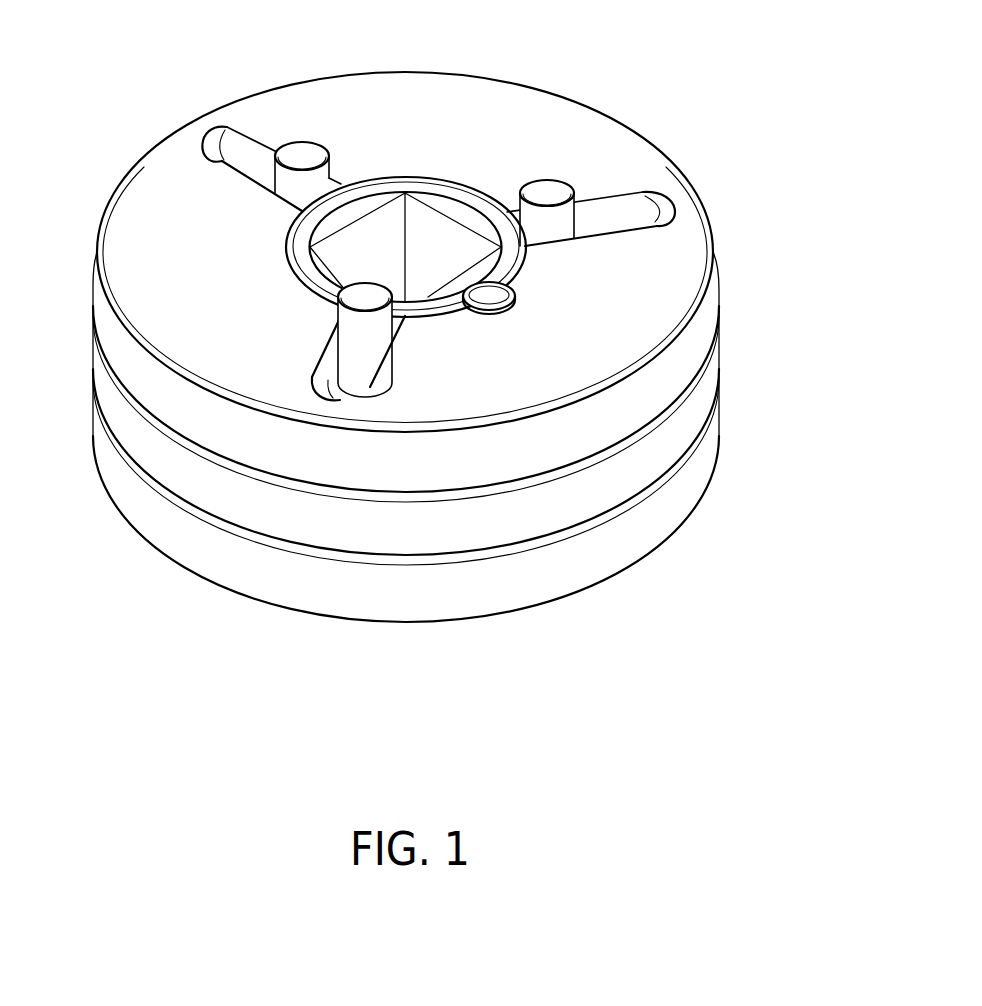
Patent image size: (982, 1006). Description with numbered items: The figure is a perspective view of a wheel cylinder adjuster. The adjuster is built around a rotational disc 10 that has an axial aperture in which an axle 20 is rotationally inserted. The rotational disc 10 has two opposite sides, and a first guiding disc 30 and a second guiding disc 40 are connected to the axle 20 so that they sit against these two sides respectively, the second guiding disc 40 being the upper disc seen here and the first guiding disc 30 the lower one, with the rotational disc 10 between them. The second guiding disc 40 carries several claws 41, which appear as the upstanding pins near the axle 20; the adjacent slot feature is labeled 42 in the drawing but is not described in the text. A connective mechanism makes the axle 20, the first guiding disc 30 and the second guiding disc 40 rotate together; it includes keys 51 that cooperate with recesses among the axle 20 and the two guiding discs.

The rotational disc 10 is at (568, 503).
The axle 20 is at (463, 217).
The first guiding disc 30 is at (495, 589).
The second guiding disc 40 is at (630, 405).
The claws 41 is at (300, 157).
The radial slot arm 42 is at (213, 131).
The keys 51 is at (490, 297).